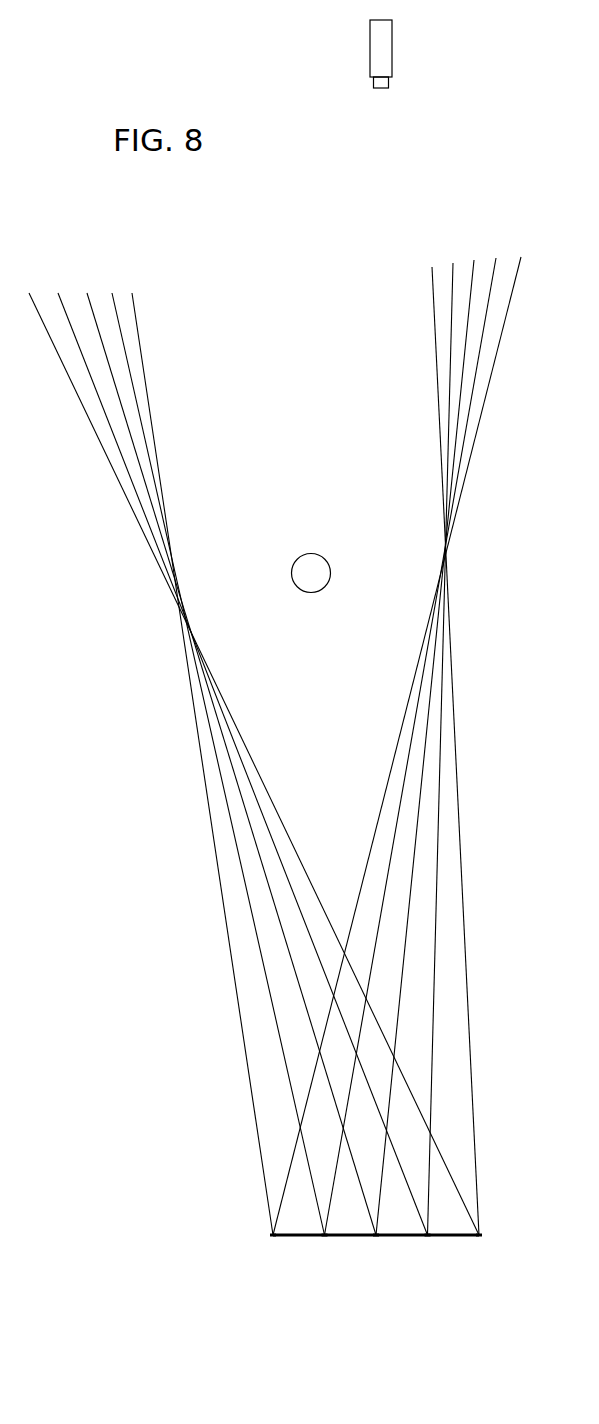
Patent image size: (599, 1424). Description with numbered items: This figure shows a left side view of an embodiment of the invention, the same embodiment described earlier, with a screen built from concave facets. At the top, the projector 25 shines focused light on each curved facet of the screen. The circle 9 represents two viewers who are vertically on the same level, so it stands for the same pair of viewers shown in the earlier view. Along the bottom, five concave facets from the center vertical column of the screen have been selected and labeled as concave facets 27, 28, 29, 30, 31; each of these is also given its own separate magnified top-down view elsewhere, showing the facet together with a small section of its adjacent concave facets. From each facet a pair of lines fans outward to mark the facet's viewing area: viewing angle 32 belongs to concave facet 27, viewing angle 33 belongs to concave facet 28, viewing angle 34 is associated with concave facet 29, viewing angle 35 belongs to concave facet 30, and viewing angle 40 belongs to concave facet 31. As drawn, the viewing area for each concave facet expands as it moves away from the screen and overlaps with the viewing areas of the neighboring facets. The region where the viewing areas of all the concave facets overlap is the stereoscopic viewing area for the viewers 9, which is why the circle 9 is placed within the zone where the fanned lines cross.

The projector 25 is at (398, 60).
The viewers 9 is at (307, 552).
The concave facet 27 is at (479, 1235).
The concave facet 28 is at (428, 1235).
The concave facet 29 is at (376, 1235).
The concave facet 30 is at (324, 1235).
The concave facet 31 is at (273, 1235).
The viewing angle 32 is at (468, 1167).
The viewing angle 33 is at (417, 1173).
The viewing angle 34 is at (370, 1179).
The viewing angle 35 is at (322, 1182).
The viewing angle 40 is at (278, 1176).